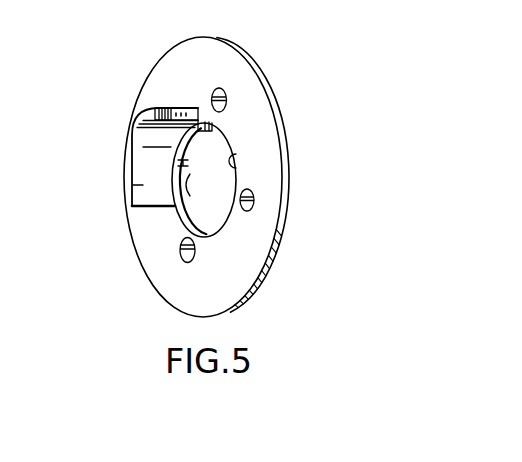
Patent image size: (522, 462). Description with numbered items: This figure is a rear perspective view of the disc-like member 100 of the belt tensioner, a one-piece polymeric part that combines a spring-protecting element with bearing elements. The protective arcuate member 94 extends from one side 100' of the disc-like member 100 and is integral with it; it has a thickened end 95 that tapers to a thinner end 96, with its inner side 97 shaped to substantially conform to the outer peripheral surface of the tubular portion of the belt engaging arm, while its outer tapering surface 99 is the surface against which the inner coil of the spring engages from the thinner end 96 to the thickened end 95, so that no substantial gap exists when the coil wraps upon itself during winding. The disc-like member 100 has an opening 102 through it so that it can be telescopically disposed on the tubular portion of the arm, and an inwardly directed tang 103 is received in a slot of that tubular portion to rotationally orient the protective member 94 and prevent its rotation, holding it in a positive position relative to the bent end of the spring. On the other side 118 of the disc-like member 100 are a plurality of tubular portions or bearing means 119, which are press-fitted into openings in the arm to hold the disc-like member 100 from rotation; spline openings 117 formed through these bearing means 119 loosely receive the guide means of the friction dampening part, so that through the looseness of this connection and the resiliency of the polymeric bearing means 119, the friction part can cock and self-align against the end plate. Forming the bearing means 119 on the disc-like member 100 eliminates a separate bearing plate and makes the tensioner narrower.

The disc-like member 100 is at (202, 164).
The one side of the disc-like member 100' is at (188, 279).
The protective arcuate member 94 is at (147, 158).
The thickened end 95 is at (178, 107).
The thinner end 96 is at (155, 208).
The inner side 97 is at (123, 183).
The outer tapering surface 99 is at (143, 116).
The opening 102 is at (232, 158).
The inwardly directed tang 103 is at (220, 125).
The spline openings 117 is at (180, 250).
The other side of the disc-like member 118 is at (290, 222).
The tubular portions or bearing means 119 is at (198, 180).